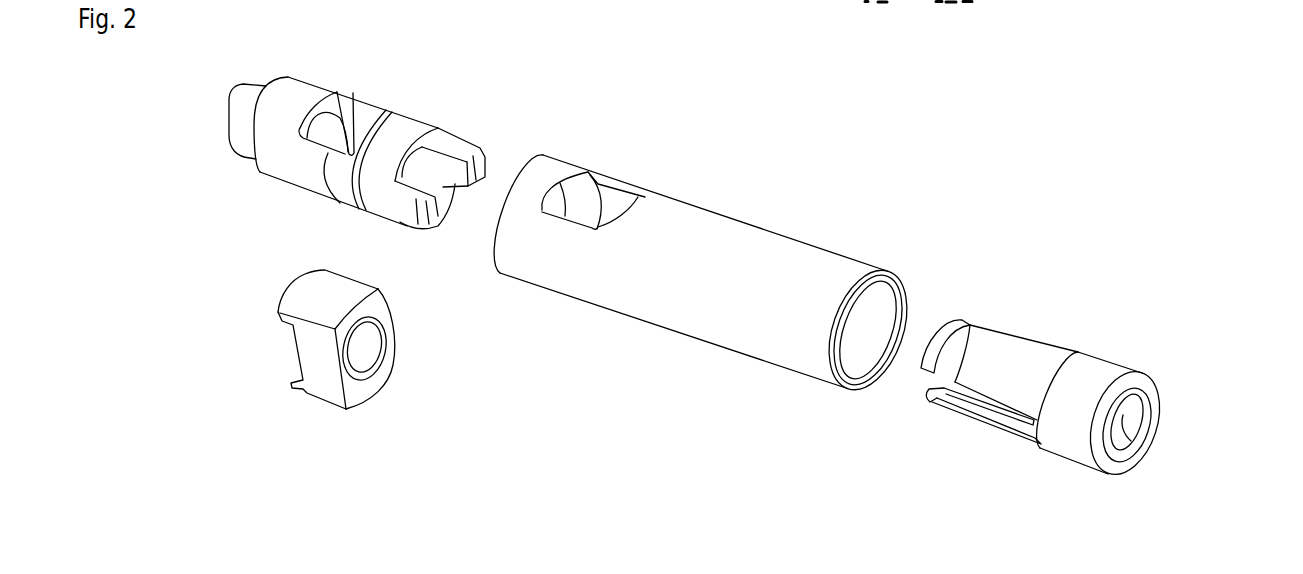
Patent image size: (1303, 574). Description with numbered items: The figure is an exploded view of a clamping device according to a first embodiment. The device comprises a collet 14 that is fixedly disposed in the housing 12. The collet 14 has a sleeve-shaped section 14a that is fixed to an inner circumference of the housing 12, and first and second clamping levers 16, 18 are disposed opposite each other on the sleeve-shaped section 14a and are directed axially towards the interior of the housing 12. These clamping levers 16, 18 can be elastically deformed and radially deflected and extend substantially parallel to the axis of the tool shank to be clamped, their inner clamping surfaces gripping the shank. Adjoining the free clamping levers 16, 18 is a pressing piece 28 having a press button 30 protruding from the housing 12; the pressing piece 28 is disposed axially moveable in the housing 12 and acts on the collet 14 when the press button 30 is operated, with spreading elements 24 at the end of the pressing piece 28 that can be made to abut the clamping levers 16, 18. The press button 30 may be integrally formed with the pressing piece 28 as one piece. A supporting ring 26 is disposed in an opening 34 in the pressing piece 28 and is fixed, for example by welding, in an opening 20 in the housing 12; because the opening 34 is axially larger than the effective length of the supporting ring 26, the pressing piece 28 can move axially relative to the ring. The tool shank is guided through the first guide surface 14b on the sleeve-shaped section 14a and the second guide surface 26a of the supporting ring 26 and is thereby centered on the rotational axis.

The housing 12 is at (707, 264).
The collet 14 is at (1085, 363).
The sleeve-shaped section 14a is at (1094, 373).
The first guide surface 14b is at (1130, 447).
The first clamping lever 16 is at (984, 367).
The second clamping lever 18 is at (976, 420).
The opening 20 is at (589, 209).
The spreading elements 24 is at (452, 143).
The supporting ring 26 is at (382, 334).
The second guide surface 26a is at (370, 338).
The pressing piece 28 is at (307, 97).
The press button 30 is at (253, 95).
The opening 34 is at (365, 113).